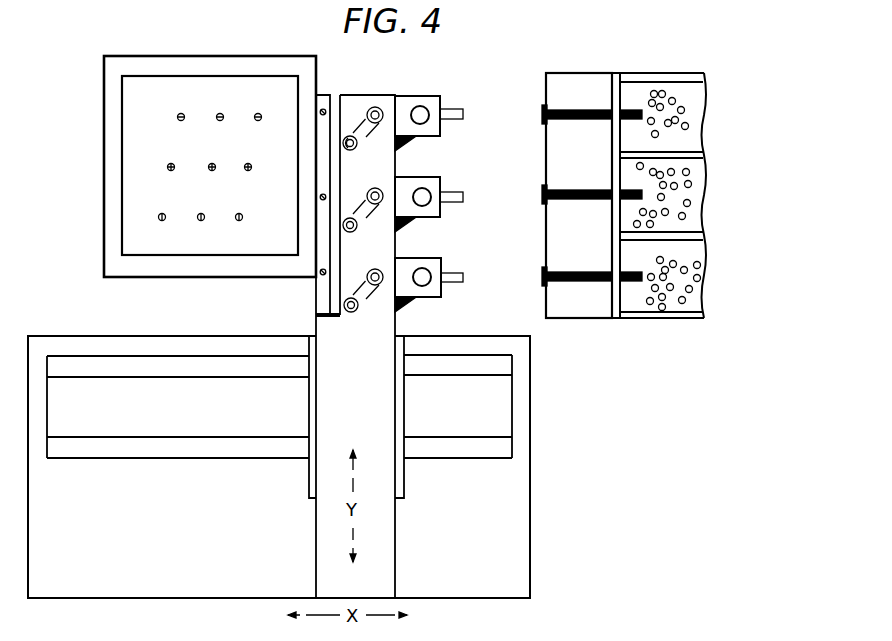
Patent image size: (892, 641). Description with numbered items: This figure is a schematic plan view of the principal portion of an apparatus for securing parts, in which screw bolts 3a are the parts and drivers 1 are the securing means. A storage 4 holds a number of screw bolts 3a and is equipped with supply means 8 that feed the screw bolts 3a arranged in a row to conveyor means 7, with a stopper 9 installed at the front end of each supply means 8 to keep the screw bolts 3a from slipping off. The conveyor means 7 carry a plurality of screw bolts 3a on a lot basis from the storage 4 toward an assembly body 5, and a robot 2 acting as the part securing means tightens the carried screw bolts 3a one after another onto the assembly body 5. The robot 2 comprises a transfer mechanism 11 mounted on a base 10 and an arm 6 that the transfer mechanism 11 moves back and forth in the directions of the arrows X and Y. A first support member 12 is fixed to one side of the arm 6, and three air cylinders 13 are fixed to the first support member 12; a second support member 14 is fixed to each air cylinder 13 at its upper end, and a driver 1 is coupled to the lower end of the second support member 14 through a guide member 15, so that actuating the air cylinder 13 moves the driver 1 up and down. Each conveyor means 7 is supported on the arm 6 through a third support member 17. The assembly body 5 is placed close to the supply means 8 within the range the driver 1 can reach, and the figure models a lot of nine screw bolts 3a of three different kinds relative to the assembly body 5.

The driver 1 is at (420, 112).
The robot 2 is at (252, 336).
The screw bolt 3a is at (181, 121).
The storage 4 is at (577, 319).
The assembly body 5 is at (171, 85).
The arm 6 is at (357, 103).
The conveyor means 7 is at (452, 110).
The supply means 8 is at (593, 123).
The stopper 9 is at (542, 115).
The base 10 is at (530, 490).
The transfer mechanism 11 is at (200, 460).
The first support member 12 is at (327, 103).
The air cylinder 13 is at (350, 151).
The second support member 14 is at (377, 124).
The guide member 15 is at (428, 136).
The third support member 17 is at (400, 145).